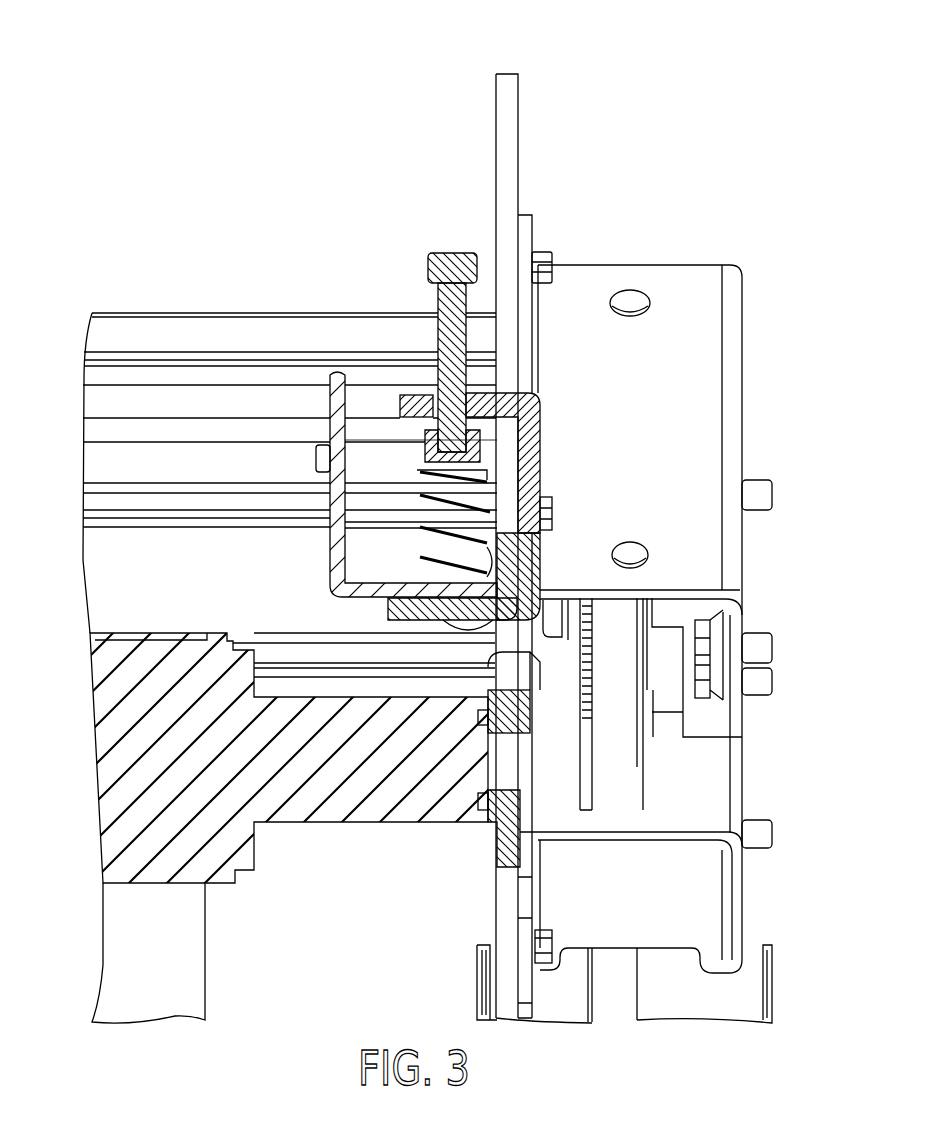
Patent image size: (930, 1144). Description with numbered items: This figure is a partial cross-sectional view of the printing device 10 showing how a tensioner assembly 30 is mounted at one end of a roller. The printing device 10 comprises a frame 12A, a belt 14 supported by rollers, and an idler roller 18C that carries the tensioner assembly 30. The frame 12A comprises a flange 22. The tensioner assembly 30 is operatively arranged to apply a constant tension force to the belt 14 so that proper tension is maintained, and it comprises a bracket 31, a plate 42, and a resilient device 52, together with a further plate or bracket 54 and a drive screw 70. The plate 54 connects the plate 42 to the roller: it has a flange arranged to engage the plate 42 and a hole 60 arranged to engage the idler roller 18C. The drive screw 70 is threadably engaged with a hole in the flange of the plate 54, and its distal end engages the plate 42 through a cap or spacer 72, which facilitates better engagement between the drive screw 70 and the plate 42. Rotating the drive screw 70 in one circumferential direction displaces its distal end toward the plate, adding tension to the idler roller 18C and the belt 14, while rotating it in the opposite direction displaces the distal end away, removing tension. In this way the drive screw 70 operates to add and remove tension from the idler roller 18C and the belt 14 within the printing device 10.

The printing device 10 is at (108, 97).
The frame 12A is at (508, 110).
The belt 14 is at (108, 640).
The idler roller 18C is at (100, 797).
The flange 22 is at (417, 612).
The tensioner assembly 30 is at (283, 218).
The bracket 31 is at (332, 552).
The plate 42 is at (367, 465).
The resilient device 52 is at (378, 522).
The plate 54 is at (530, 440).
The hole 60 is at (520, 683).
The drive screw 70 is at (448, 303).
The cap 72 is at (478, 435).